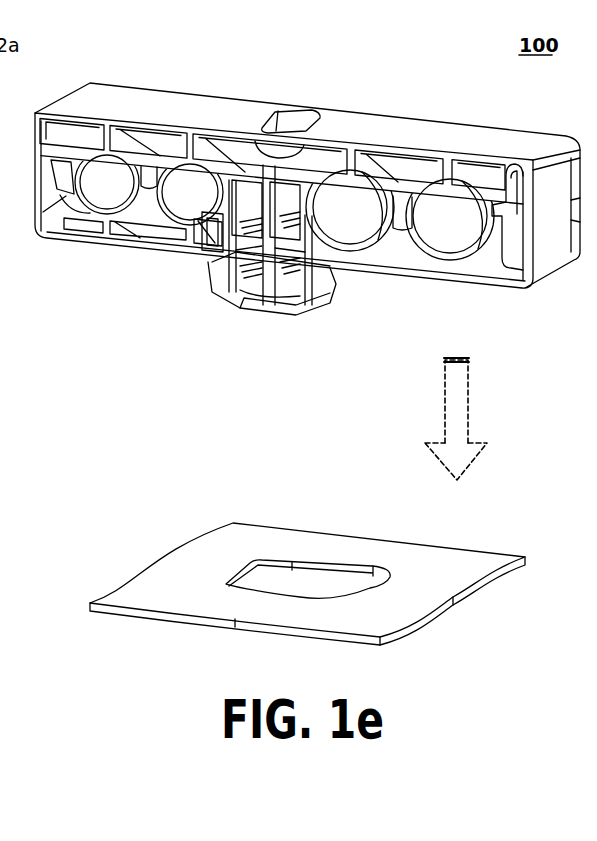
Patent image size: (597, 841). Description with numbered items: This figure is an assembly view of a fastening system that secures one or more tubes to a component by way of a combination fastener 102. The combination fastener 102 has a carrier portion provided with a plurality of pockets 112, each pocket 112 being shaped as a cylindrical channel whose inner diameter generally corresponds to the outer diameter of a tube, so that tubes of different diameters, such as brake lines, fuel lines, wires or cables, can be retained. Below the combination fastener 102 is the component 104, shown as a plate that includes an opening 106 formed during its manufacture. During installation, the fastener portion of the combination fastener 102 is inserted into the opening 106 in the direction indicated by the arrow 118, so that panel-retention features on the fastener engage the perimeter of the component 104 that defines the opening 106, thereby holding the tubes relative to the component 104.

The combination fastener 102 is at (143, 91).
The component 104 is at (183, 547).
The opening 106 is at (317, 580).
The pocket 112 is at (337, 203).
The arrow 118 is at (468, 403).